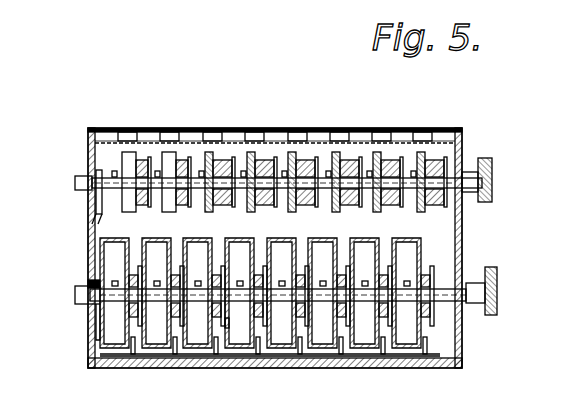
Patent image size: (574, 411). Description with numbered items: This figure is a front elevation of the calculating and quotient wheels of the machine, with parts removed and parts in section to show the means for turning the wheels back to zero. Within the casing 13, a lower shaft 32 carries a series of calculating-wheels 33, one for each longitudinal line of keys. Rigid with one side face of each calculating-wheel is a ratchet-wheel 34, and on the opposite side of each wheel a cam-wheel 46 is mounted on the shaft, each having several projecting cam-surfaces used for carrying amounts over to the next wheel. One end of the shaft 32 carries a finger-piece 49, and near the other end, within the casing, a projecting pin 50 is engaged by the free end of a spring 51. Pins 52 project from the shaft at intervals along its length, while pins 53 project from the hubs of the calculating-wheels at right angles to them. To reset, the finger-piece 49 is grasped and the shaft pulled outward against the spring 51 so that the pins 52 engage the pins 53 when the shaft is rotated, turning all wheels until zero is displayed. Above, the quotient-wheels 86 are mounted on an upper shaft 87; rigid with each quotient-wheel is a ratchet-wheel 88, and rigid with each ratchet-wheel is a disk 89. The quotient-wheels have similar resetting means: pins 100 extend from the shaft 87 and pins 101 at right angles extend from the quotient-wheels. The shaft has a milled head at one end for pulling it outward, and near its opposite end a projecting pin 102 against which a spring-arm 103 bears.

The casing 13 is at (460, 240).
The shaft 32 is at (76, 297).
The calculating-wheels 33 is at (216, 338).
The ratchet-wheel 34 is at (222, 322).
The cam-wheels 46 is at (196, 318).
The finger-piece 49 is at (497, 290).
The projecting pin 50 is at (88, 283).
The spring 51 is at (98, 322).
The pins 52 is at (150, 280).
The pins 53 is at (133, 276).
The quotient-wheels 86 is at (168, 156).
The shaft 87 is at (75, 182).
The ratchet-wheel 88 is at (432, 206).
The disk 89 is at (442, 172).
The pins 100 is at (284, 166).
The pins 101 is at (252, 166).
The projecting pin 102 is at (95, 195).
The spring-arm 103 is at (100, 167).